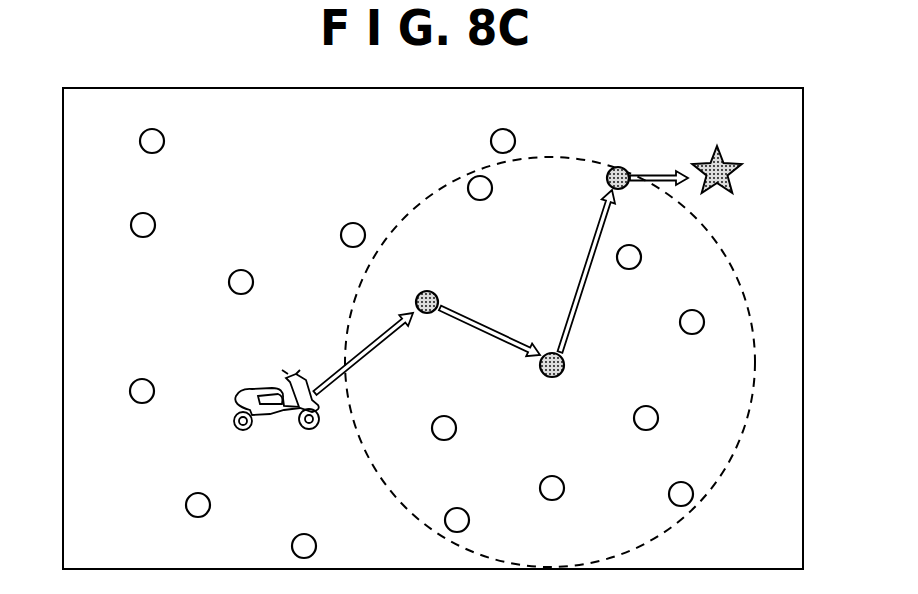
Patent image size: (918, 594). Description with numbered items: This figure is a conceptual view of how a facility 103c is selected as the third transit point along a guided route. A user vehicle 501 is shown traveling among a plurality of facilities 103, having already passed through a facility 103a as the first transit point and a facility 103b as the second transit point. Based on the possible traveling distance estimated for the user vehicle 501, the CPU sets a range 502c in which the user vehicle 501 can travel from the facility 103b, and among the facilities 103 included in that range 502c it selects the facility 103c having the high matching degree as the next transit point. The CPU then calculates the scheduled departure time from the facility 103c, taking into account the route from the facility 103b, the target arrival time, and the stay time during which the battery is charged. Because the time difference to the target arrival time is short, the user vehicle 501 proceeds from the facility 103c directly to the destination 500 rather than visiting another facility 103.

The facility 103 is at (466, 508).
The facility as the first transit point 103a is at (433, 290).
The facility as the second transit point 103b is at (549, 378).
The facility as the third transit point 103c is at (622, 167).
The destination 500 is at (724, 158).
The user vehicle 501 is at (248, 382).
The range 502c is at (428, 200).